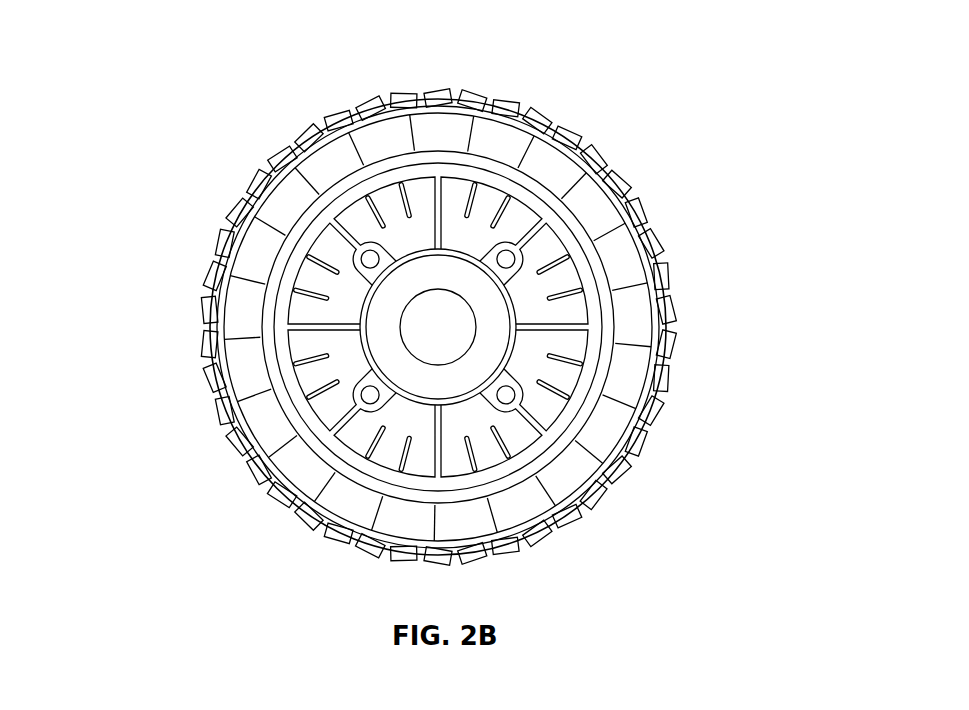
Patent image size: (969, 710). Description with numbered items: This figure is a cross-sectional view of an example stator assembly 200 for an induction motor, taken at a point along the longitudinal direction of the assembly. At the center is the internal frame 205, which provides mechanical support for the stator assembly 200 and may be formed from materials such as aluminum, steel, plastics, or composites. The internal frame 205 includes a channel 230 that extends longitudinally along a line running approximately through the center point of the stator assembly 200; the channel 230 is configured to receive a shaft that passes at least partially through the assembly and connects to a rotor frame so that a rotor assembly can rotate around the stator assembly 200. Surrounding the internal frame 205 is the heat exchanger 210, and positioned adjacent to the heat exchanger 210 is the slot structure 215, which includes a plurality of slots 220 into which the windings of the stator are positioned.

The stator assembly 200 is at (168, 162).
The internal frame 205 is at (488, 330).
The heat exchanger 210 is at (484, 209).
The slot structure 215 is at (612, 425).
The slots 220 is at (503, 93).
The channel 230 is at (438, 333).